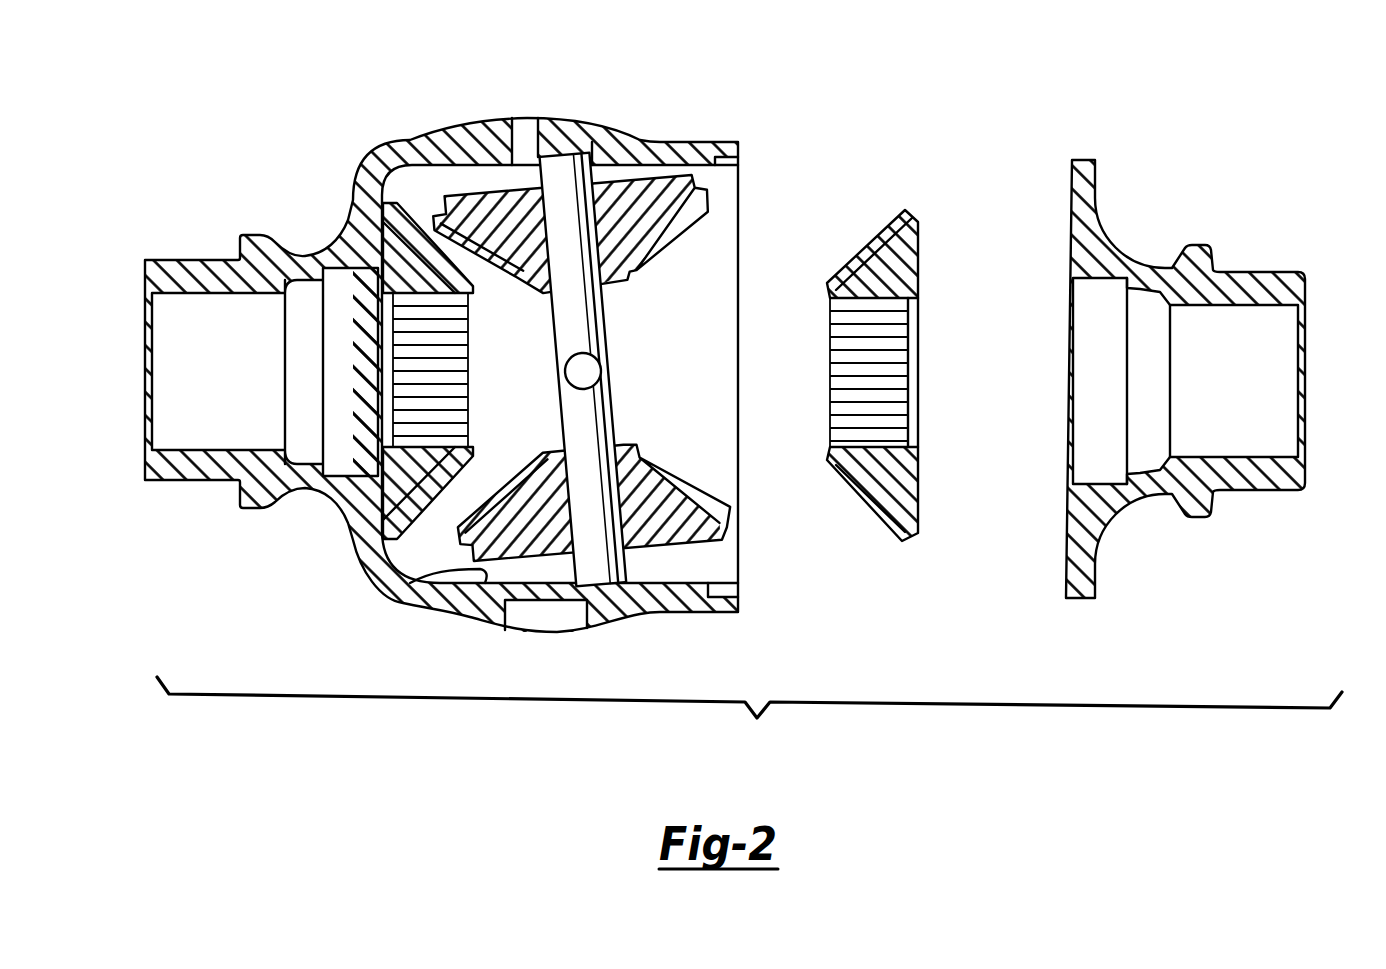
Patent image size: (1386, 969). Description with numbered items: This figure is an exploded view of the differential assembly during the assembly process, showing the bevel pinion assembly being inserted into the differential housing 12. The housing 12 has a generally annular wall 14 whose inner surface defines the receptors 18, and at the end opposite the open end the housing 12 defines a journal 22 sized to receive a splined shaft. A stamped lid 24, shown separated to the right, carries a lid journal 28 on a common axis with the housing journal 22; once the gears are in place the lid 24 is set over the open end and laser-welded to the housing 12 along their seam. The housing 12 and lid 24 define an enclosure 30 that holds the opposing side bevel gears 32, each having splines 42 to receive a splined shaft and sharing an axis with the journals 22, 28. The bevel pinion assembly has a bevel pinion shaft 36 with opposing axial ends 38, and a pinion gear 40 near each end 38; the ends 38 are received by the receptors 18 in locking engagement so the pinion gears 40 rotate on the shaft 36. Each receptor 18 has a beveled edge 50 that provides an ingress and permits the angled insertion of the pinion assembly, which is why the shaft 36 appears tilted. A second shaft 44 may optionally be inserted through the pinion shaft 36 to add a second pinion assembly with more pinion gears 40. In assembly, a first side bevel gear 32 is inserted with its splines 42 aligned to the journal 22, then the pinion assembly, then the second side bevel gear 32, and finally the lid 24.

The differential housing 12 is at (380, 592).
The annular wall 14 is at (490, 138).
The receptor 18 is at (543, 128).
The journal 22 is at (200, 483).
The lid 24 is at (1115, 244).
The lid journal 28 is at (1253, 268).
The enclosure 30 is at (423, 184).
The side bevel gear 32 is at (403, 485).
The bevel pinion shaft 36 is at (577, 313).
The axial end 38 is at (568, 152).
The pinion gear 40 is at (657, 184).
The splines 42 is at (402, 362).
The second shaft 44 is at (587, 372).
The beveled edge 50 is at (603, 158).